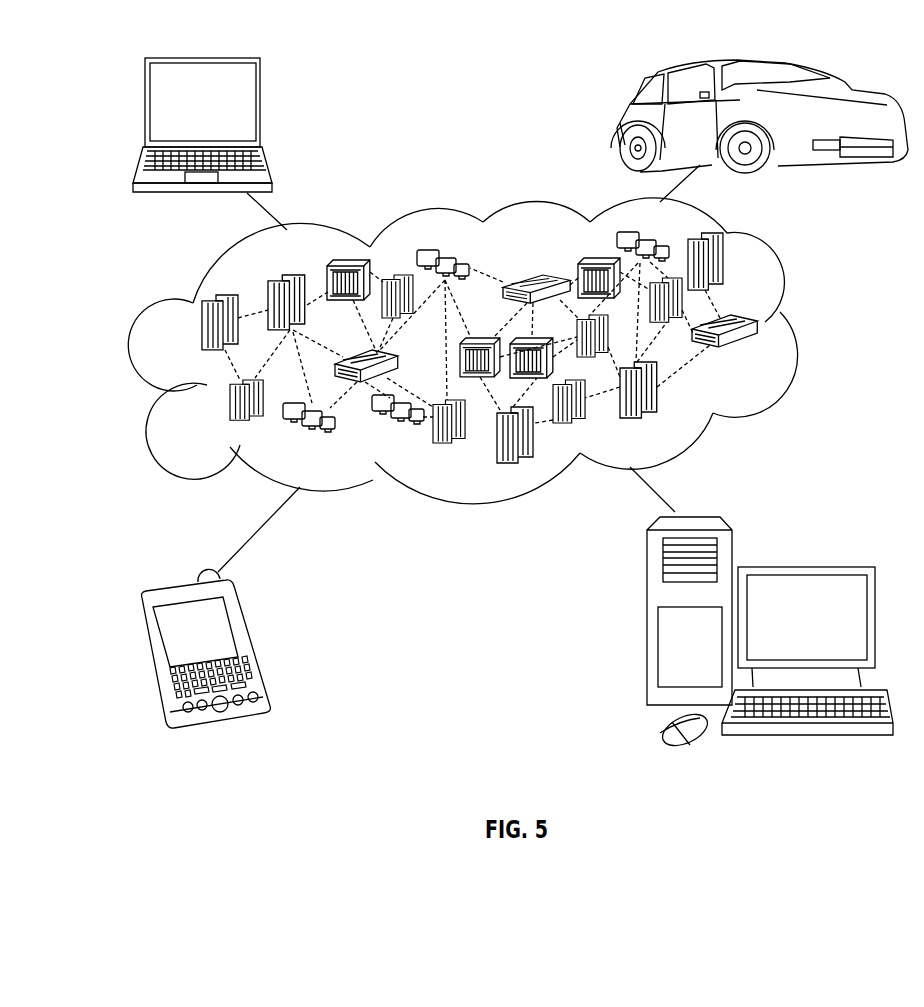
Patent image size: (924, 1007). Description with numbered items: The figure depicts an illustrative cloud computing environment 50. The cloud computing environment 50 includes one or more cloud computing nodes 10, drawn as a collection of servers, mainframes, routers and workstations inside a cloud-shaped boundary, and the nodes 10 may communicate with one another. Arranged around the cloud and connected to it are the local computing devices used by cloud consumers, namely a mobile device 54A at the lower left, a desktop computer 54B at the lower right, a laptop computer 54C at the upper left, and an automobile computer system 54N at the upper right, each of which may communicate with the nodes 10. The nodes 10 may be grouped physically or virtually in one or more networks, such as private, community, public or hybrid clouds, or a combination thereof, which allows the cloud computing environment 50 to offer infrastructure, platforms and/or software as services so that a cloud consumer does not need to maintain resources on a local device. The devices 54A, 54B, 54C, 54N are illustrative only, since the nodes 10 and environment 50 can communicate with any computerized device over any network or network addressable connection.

The cloud computing node 10 is at (765, 358).
The cloud computing environment 50 is at (810, 330).
The mobile device 54A is at (252, 642).
The desktop computer 54B is at (805, 565).
The laptop computer 54C is at (262, 110).
The automobile computer system 54N is at (622, 122).